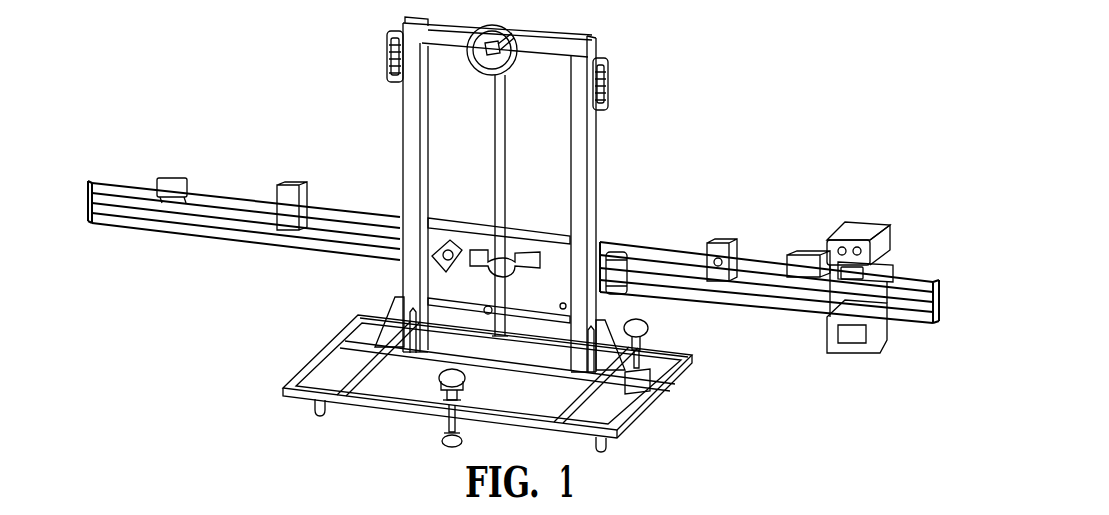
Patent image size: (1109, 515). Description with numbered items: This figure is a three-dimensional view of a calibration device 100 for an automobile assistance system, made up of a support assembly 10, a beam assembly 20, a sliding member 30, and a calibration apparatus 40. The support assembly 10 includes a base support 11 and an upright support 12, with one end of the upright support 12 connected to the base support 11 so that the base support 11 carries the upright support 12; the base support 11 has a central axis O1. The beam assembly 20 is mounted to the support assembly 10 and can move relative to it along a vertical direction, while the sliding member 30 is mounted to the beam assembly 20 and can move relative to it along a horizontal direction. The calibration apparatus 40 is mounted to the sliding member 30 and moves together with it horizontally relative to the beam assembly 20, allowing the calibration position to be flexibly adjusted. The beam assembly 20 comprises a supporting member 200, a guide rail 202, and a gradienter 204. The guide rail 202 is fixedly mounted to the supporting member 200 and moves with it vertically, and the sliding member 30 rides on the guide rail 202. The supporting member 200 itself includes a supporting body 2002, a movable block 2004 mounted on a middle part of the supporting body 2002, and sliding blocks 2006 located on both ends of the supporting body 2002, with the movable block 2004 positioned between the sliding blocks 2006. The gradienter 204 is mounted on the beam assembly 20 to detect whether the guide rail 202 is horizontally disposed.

The calibration device 100 is at (669, 104).
The support assembly 10 is at (279, 268).
The base support 11 is at (352, 320).
The upright support 12 is at (403, 268).
The beam assembly 20 is at (737, 112).
The supporting member 200 is at (690, 150).
The supporting body 2002 is at (538, 256).
The movable block 2004 is at (543, 240).
The sliding block 2006 is at (597, 243).
The guide rail 202 is at (640, 253).
The gradienter 204 is at (511, 222).
The calibration apparatus 40 is at (857, 222).
The sliding member 30 is at (891, 254).
The central axis O1 is at (428, 420).